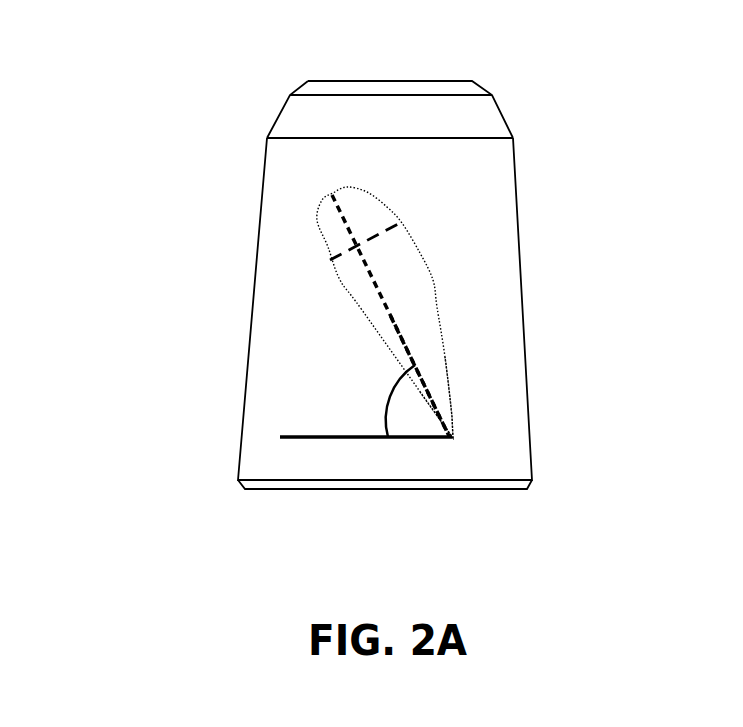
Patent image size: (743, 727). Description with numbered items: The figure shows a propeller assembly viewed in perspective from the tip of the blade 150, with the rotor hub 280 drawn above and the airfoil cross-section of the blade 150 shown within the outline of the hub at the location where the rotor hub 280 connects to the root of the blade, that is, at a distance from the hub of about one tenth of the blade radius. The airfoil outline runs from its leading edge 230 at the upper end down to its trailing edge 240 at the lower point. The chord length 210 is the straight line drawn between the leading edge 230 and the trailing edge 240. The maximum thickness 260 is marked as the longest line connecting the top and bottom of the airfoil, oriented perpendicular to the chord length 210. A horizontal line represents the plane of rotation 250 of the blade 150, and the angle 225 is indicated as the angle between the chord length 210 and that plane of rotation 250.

The blade 150 is at (400, 293).
The chord length 210 is at (407, 333).
The angle 225 is at (379, 401).
The leading edge 230 is at (315, 183).
The trailing edge 240 is at (467, 452).
The plane of rotation 250 is at (328, 437).
The maximum thickness 260 is at (392, 222).
The rotor hub 280 is at (400, 92).